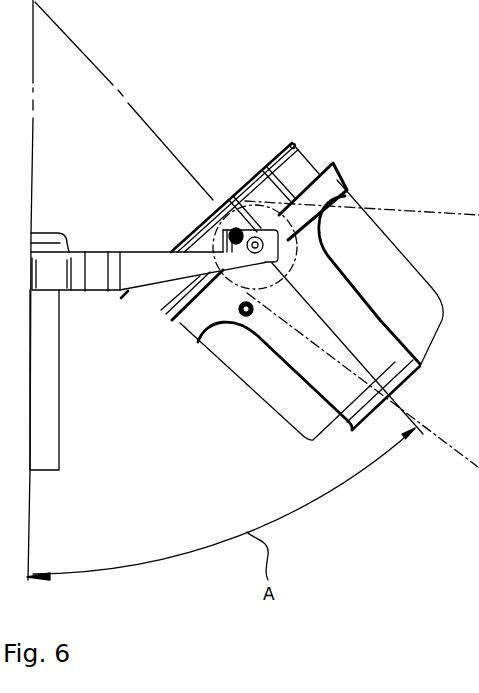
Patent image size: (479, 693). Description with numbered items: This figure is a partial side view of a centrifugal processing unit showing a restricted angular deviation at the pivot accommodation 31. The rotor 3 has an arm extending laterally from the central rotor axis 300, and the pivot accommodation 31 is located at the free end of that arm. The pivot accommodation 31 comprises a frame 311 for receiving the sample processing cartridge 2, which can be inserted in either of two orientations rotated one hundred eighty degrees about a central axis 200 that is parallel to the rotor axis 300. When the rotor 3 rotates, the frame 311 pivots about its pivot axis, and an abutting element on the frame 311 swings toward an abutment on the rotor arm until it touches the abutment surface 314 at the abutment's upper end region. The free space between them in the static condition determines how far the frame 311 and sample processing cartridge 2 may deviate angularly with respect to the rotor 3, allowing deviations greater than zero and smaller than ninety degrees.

The sample processing cartridge 2 is at (380, 257).
The rotor 3 is at (45, 423).
The pivot accommodation 31 is at (303, 100).
The frame 311 is at (357, 403).
The abutment surface 314 is at (363, 380).
The central axis 200 is at (147, 125).
The rotor axis 300 is at (33, 83).